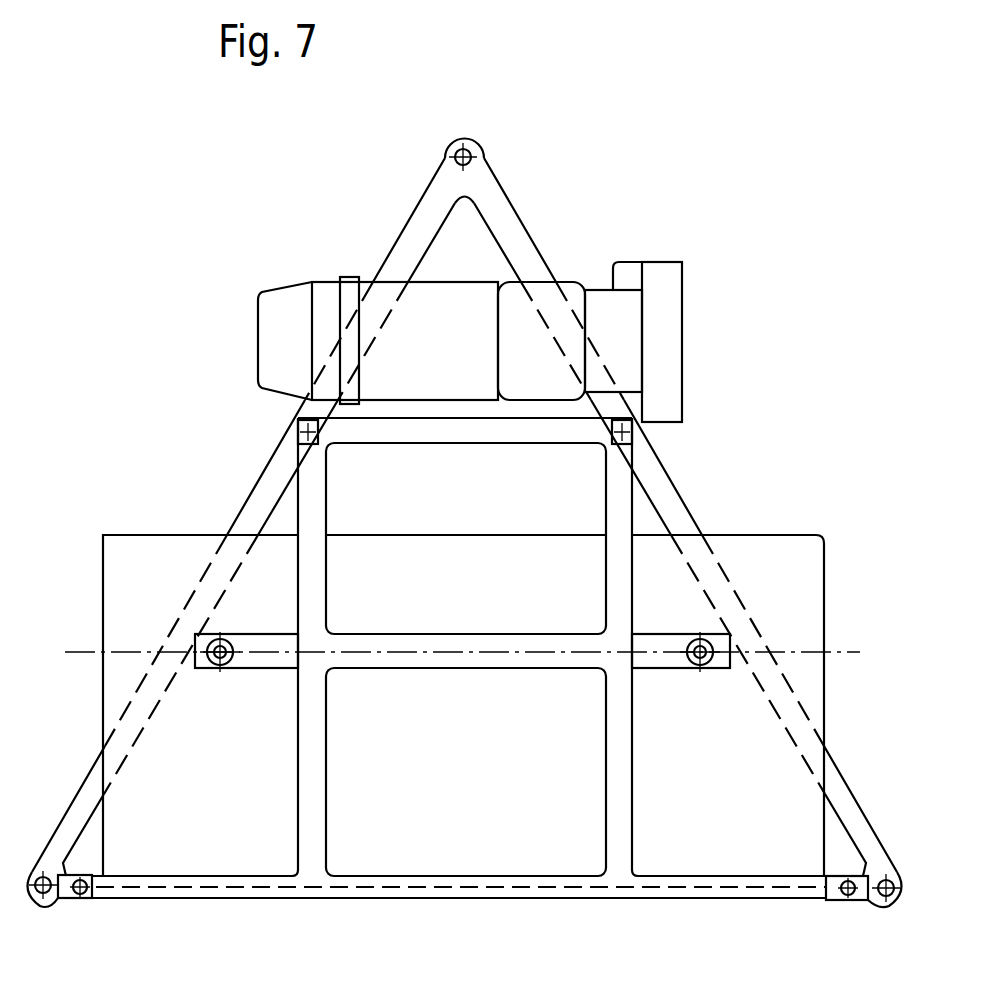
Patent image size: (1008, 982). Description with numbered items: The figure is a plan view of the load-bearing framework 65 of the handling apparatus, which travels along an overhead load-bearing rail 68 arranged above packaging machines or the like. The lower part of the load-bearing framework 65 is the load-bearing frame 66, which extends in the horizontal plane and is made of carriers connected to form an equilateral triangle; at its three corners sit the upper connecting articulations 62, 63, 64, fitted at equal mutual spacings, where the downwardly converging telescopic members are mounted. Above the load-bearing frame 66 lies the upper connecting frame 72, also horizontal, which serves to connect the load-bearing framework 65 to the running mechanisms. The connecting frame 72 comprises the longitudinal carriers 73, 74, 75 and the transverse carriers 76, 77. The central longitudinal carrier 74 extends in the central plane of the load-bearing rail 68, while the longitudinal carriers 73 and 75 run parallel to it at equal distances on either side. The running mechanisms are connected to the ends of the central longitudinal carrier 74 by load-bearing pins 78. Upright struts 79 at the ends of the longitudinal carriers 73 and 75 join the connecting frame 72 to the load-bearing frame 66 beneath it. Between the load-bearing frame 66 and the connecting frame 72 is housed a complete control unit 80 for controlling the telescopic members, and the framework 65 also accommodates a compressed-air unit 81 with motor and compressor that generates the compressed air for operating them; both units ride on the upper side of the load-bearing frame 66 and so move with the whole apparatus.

The upper connecting articulation 62 is at (45, 900).
The upper connecting articulation 63 is at (886, 905).
The upper connecting articulation 64 is at (470, 150).
The load-bearing framework 65 is at (757, 453).
The load-bearing frame 66 is at (518, 192).
The load-bearing rail 68 is at (857, 650).
The upper connecting frame 72 is at (598, 800).
The longitudinal carrier 73 is at (455, 447).
The central longitudinal carrier 74 is at (470, 668).
The longitudinal carrier 75 is at (388, 897).
The transverse carrier 76 is at (298, 800).
The transverse carrier 77 is at (633, 800).
The load-bearing pin 78 is at (224, 666).
The upright strut 79 is at (300, 430).
The control unit 80 is at (752, 545).
The compressed-air unit 81 is at (333, 270).